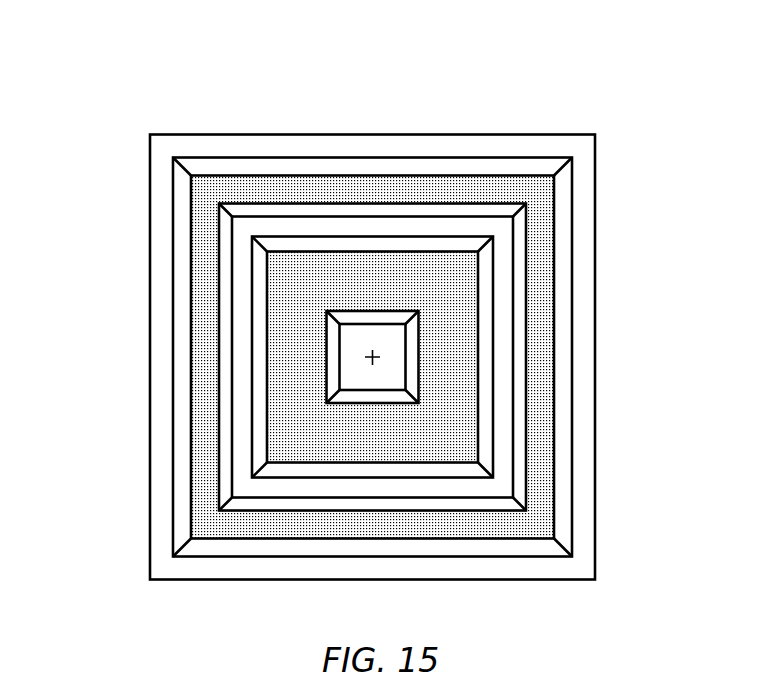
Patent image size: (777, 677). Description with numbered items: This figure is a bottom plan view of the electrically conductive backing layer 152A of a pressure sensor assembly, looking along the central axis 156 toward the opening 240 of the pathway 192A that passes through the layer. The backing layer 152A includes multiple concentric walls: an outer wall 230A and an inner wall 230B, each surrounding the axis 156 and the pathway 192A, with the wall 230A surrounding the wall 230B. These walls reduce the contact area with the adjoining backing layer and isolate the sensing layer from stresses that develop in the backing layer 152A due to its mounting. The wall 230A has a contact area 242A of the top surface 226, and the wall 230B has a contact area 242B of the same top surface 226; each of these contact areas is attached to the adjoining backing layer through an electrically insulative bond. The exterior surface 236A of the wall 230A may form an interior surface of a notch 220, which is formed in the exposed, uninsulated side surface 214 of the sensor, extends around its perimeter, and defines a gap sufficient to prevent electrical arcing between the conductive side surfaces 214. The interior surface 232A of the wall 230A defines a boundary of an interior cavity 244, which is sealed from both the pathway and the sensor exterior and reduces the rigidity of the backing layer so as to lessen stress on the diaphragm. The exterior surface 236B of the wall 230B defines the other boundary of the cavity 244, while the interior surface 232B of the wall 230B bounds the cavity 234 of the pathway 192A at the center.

The electrically conductive backing layer 152A is at (140, 80).
The axis 156 is at (376, 354).
The pathway 192A is at (319, 337).
The side surface 214 is at (563, 132).
The notch 220 is at (604, 224).
The surface 226 is at (250, 187).
The wall 230A is at (543, 190).
The wall 230B is at (278, 400).
The interior surface 232A is at (298, 213).
The interior surface 232B is at (357, 318).
The cavity 234 is at (371, 378).
The exterior surface 236A is at (510, 165).
The exterior surface 236B is at (375, 243).
The opening 240 is at (405, 344).
The contact area 242A is at (197, 517).
The contact area 242B is at (283, 272).
The interior cavity 244 is at (467, 227).